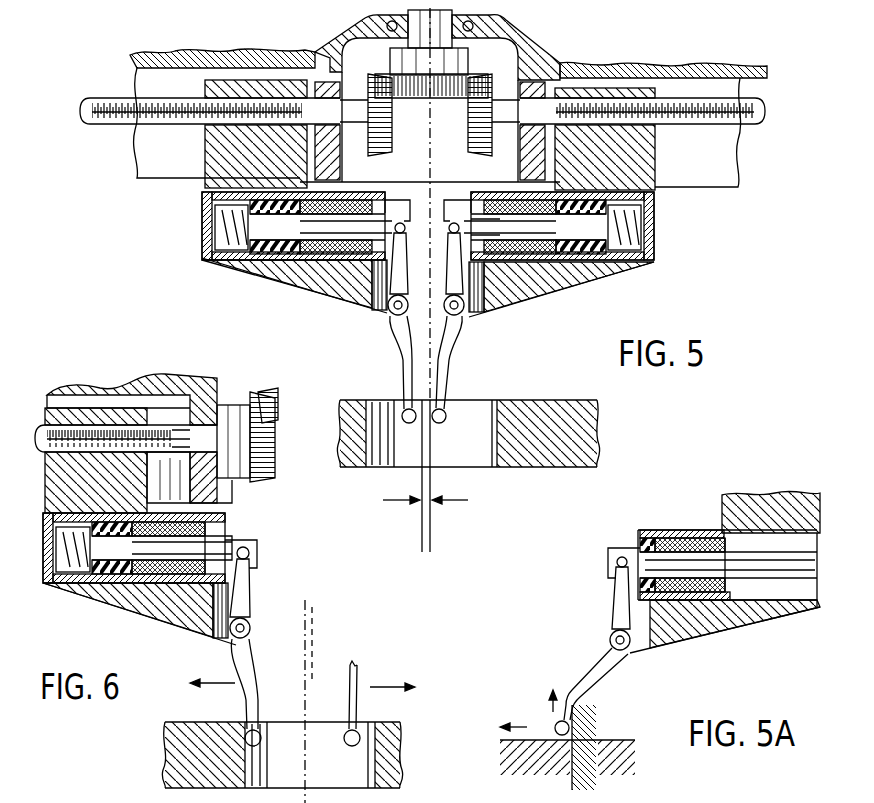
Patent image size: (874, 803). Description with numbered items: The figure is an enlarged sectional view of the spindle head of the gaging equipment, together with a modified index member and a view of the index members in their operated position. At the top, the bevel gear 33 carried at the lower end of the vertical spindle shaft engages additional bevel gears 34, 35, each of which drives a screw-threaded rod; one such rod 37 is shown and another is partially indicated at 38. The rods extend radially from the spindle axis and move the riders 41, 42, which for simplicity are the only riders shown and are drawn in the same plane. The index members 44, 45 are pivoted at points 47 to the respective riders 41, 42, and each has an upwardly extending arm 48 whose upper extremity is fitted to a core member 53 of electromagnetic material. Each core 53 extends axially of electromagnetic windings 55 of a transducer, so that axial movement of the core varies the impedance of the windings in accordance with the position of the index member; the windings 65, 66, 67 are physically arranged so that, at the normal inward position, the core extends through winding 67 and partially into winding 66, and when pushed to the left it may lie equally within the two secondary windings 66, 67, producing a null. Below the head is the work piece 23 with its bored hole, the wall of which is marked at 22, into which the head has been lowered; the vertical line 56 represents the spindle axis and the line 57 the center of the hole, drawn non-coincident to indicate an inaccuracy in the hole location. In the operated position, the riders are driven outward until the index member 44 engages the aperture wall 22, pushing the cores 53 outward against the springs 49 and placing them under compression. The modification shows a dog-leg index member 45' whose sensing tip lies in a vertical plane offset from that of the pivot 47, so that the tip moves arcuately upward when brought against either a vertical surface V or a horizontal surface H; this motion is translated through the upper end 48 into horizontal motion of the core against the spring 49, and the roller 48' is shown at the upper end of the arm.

In FIG. 5, the slot in workpiece 22 is at (493, 406).
In FIG. 6, the slot in workpiece 22 is at (372, 730).
In FIG. 5, the work piece 23 is at (536, 406).
In FIG. 6, the work piece 23 is at (400, 744).
In FIG. 5, the bevel gear 33 is at (466, 82).
In FIG. 6, the bevel gear 33 is at (272, 392).
In FIG. 5, the bevel gear 34 is at (393, 130).
In FIG. 6, the bevel gear 34 is at (276, 451).
In FIG. 5, the bevel gear 35 is at (468, 126).
In FIG. 5, the screw-threaded rod 37 is at (116, 126).
In FIG. 6, the screw-threaded rod 37 is at (44, 424).
In FIG. 5, the screw-threaded rod 38 is at (688, 128).
In FIG. 5, the rider 41 is at (236, 78).
In FIG. 6, the rider 41 is at (108, 408).
In FIG. 5, the rider 42 is at (560, 290).
In FIG. 5A, the rider 42 is at (688, 637).
In FIG. 5, the index member 44 is at (403, 362).
In FIG. 6, the index member 44 is at (254, 662).
In FIG. 5, the index member 45 is at (459, 369).
In FIG. 6, the index member 45 is at (369, 696).
In FIG. 5A, the dog leg index member 45' is at (588, 684).
In FIG. 5, the pivot 47 is at (392, 316).
In FIG. 5A, the pivot 47 is at (611, 634).
In FIG. 5, the upwardly extending arm 48 is at (428, 247).
In FIG. 6, the upwardly extending arm 48 is at (262, 578).
In FIG. 5A, the upwardly extending arm 48 is at (606, 588).
In FIG. 6, the roller 48' is at (271, 563).
In FIG. 5, the spring 49 is at (212, 228).
In FIG. 6, the spring 49 is at (70, 580).
In FIG. 5, the core member 53 is at (325, 245).
In FIG. 6, the core member 53 is at (205, 552).
In FIG. 5, the electromagnetic winding 55 is at (305, 194).
In FIG. 5, the vertical line 56 is at (420, 519).
In FIG. 5, the line 57 is at (432, 519).
In FIG. 5, the winding 65 is at (334, 200).
In FIG. 6, the winding 65 is at (136, 578).
In FIG. 5, the secondary winding 66 is at (340, 262).
In FIG. 6, the secondary winding 66 is at (158, 578).
In FIG. 5, the secondary winding 67 is at (380, 200).
In FIG. 6, the secondary winding 67 is at (192, 578).
In FIG. 5A, the horizontal surface H is at (612, 740).
In FIG. 5A, the vertical surface V is at (570, 775).